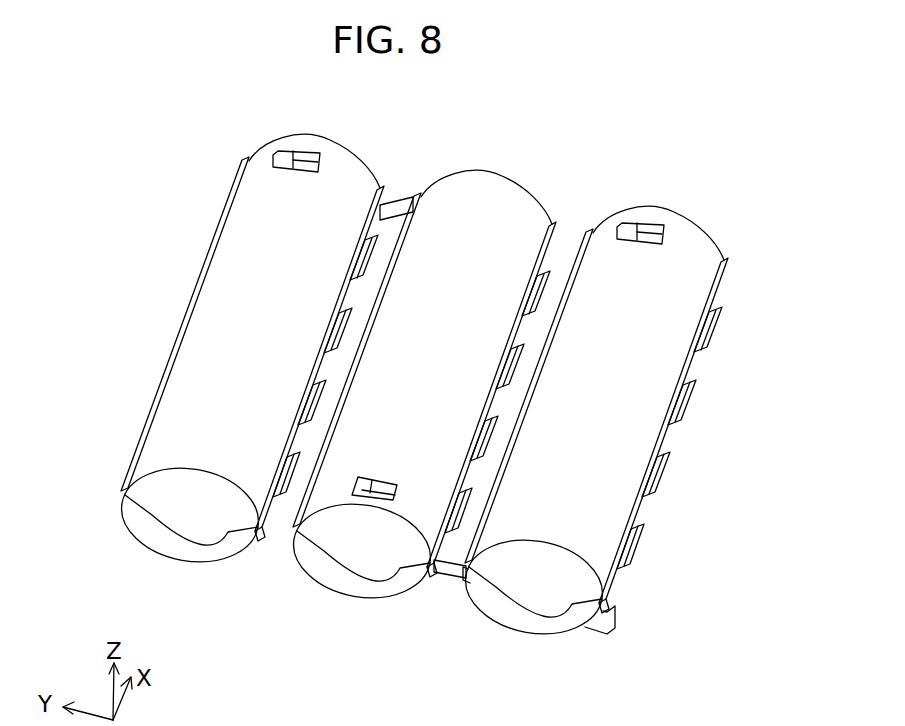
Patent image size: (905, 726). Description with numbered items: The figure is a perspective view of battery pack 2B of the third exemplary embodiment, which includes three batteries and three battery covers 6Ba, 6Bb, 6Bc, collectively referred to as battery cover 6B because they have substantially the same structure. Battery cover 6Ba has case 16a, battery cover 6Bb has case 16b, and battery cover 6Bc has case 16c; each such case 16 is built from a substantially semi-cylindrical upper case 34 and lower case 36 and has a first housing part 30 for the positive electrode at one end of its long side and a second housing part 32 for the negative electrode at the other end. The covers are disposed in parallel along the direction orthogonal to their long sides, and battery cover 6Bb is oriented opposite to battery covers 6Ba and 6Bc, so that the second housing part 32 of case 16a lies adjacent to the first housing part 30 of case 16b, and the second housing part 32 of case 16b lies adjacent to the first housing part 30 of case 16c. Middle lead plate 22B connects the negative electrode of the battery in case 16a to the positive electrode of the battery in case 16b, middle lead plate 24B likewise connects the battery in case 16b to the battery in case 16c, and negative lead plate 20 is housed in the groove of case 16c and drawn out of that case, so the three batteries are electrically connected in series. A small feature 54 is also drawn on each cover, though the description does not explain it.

The battery pack 2B is at (612, 112).
The battery cover 6B is at (433, 313).
The battery cover 6Ba is at (218, 273).
The battery cover 6Bb is at (525, 215).
The battery cover 6Bc is at (640, 437).
The case 16 is at (52, 500).
The case 16a is at (183, 353).
The case 16b is at (453, 185).
The case 16c is at (667, 365).
The negative lead plate 20 is at (617, 610).
The middle lead plate 22B is at (385, 203).
The middle lead plate 24B is at (455, 560).
The first housing part 30 is at (170, 432).
The second housing part 32 is at (283, 140).
The upper case 34 is at (140, 510).
The lower case 36 is at (157, 538).
The terminal tab 54 is at (292, 162).